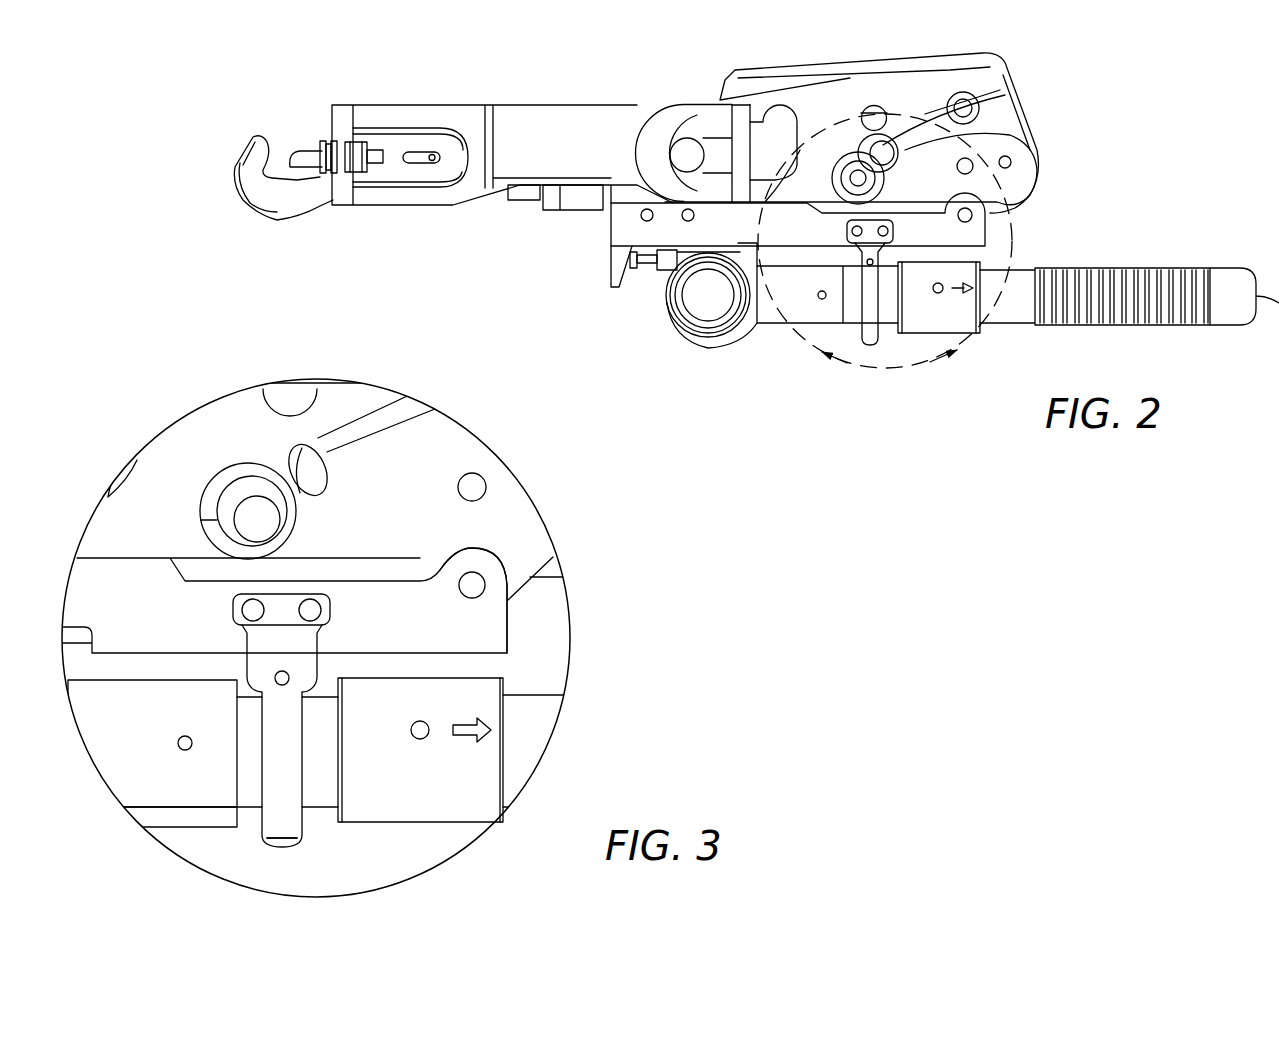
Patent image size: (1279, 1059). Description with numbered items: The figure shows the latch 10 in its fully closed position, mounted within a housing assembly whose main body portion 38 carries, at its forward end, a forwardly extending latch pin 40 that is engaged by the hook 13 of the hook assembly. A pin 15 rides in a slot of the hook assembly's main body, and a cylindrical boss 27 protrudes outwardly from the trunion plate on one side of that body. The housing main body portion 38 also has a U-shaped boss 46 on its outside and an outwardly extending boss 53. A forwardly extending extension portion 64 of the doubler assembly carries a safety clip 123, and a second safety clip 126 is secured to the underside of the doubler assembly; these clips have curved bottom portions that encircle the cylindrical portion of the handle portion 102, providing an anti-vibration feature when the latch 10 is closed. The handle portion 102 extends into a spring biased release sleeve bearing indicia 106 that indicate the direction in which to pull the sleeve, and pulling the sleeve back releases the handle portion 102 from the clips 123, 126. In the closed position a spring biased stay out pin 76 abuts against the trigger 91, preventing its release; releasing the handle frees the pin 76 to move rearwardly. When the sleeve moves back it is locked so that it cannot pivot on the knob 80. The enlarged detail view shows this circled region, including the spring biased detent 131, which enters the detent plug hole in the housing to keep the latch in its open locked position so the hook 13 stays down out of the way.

In FIG. 2, the latch 10 is at (1153, 137).
In FIG. 2, the hook 13 is at (273, 177).
In FIG. 2, the pin 15 is at (430, 157).
In FIG. 2, the cylindrical boss 27 is at (690, 152).
In FIG. 2, the main body portion 38 is at (567, 143).
In FIG. 2, the latch pin 40 is at (300, 157).
In FIG. 2, the U-shaped boss 46 is at (660, 150).
In FIG. 2, the boss 53 is at (884, 178).
In FIG. 3, the boss 53 is at (297, 527).
In FIG. 3, the extension portion 64 is at (400, 603).
In FIG. 2, the stay out pin 76 is at (635, 268).
In FIG. 2, the knob 80 is at (703, 298).
In FIG. 2, the trigger 91 is at (600, 275).
In FIG. 2, the handle portion 102 is at (1150, 287).
In FIG. 2, the indicia 106 is at (962, 277).
In FIG. 3, the indicia 106 is at (427, 792).
In FIG. 3, the safety clip 123 is at (285, 822).
In FIG. 2, the second safety clip 126 is at (867, 303).
In FIG. 3, the second safety clip 126 is at (273, 760).
In FIG. 3, the spring biased detent 131 is at (248, 520).